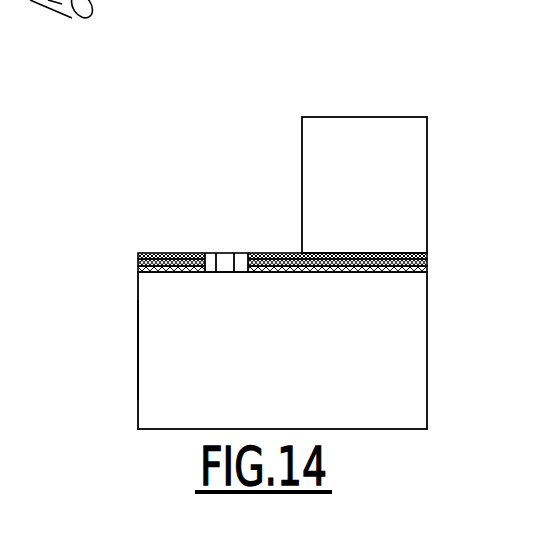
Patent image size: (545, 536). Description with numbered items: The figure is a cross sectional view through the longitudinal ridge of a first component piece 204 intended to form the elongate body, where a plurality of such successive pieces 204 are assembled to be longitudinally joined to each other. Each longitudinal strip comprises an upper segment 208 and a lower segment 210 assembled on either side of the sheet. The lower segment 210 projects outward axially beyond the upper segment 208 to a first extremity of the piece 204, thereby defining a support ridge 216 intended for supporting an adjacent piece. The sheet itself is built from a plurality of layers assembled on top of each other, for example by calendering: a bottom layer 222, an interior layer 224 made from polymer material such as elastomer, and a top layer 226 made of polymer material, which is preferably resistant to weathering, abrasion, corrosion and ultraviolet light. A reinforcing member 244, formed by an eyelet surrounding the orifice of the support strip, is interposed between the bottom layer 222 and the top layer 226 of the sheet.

The longitudinal element 204 is at (339, 106).
The upper segment 208 is at (398, 132).
The lower segment 210 is at (413, 342).
The support ridge 216 is at (157, 323).
The bottom layer 222 is at (138, 268).
The interior layer 224 is at (138, 264).
The top layer 226 is at (125, 259).
The reinforcing member 244 is at (195, 253).